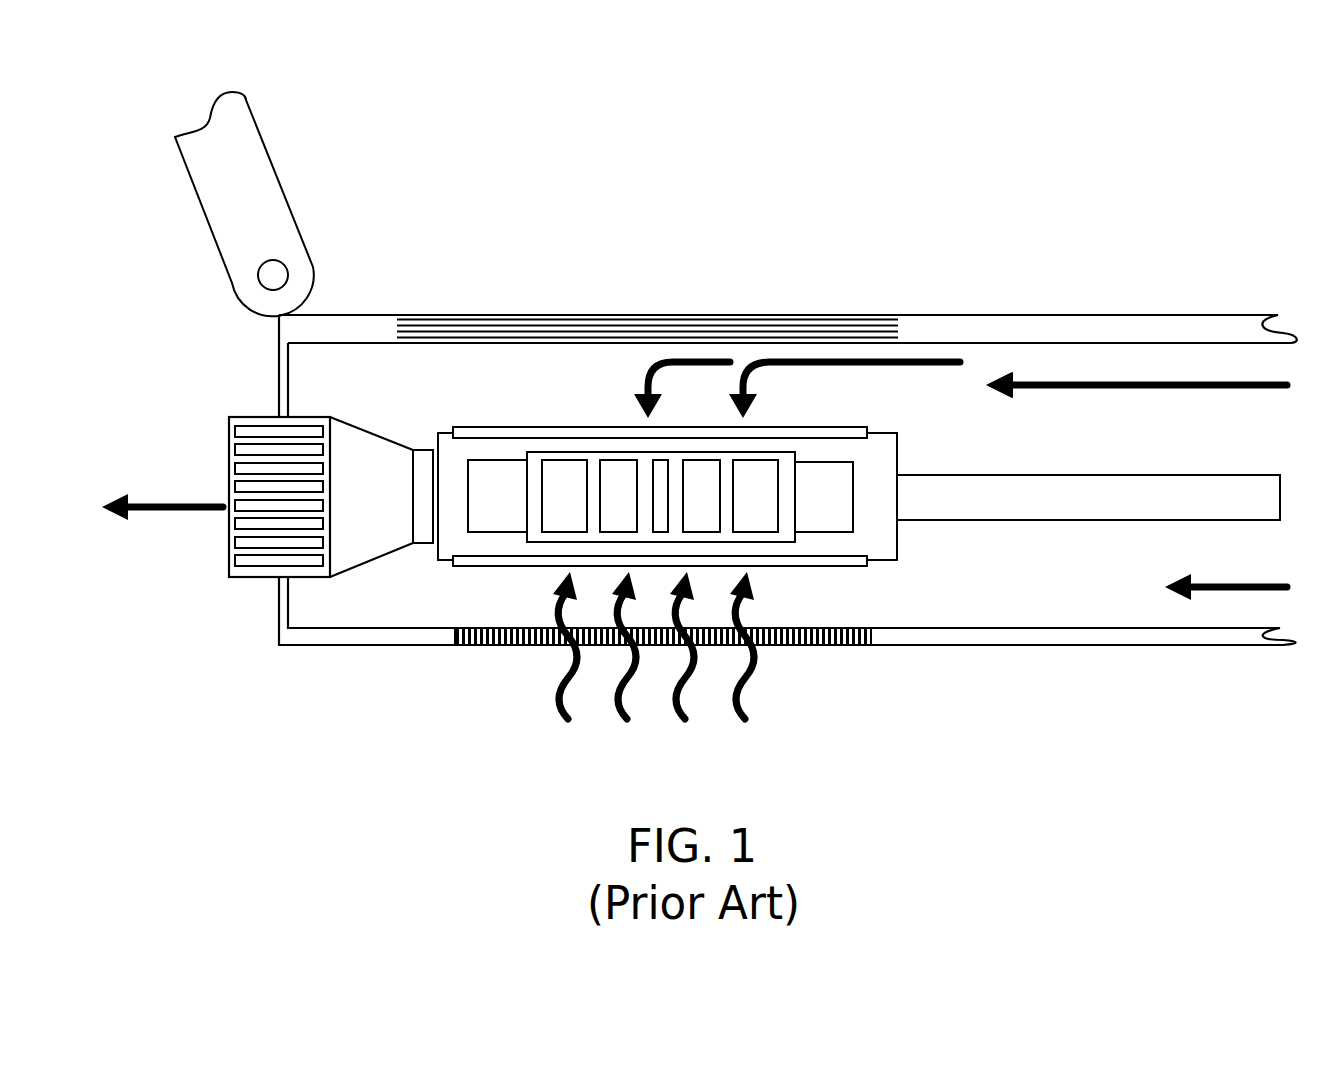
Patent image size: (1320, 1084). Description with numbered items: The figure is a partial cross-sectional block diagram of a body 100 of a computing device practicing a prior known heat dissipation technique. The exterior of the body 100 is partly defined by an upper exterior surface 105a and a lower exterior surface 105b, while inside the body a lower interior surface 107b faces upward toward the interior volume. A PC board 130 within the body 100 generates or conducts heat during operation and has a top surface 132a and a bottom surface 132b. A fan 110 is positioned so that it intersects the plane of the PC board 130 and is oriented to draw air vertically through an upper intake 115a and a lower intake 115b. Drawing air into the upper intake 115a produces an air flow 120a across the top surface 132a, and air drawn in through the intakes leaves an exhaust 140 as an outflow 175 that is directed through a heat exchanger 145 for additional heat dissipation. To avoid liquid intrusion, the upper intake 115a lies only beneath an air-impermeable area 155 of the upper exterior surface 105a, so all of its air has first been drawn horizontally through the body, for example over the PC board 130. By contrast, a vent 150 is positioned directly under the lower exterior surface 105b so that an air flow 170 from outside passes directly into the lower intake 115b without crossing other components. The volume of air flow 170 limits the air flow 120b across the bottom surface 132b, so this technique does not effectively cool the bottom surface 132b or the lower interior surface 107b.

The body 100 is at (893, 163).
The upper exterior surface 105a is at (1003, 311).
The lower exterior surface 105b is at (300, 650).
The lower interior surface 107b is at (1130, 340).
The fan 110 is at (957, 455).
The upper intake 115a is at (537, 422).
The lower intake 115b is at (525, 570).
The air flow 120a is at (1267, 432).
The air flow 120b is at (1260, 582).
The PC board 130 is at (1181, 510).
The top surface 132a is at (1105, 474).
The bottom surface 132b is at (1105, 521).
The exhaust 140 is at (417, 441).
The heat exchanger 145 is at (226, 445).
The vent 150 is at (522, 648).
The area 155 is at (533, 309).
The air flow 170 is at (680, 748).
The outflow 175 is at (208, 500).